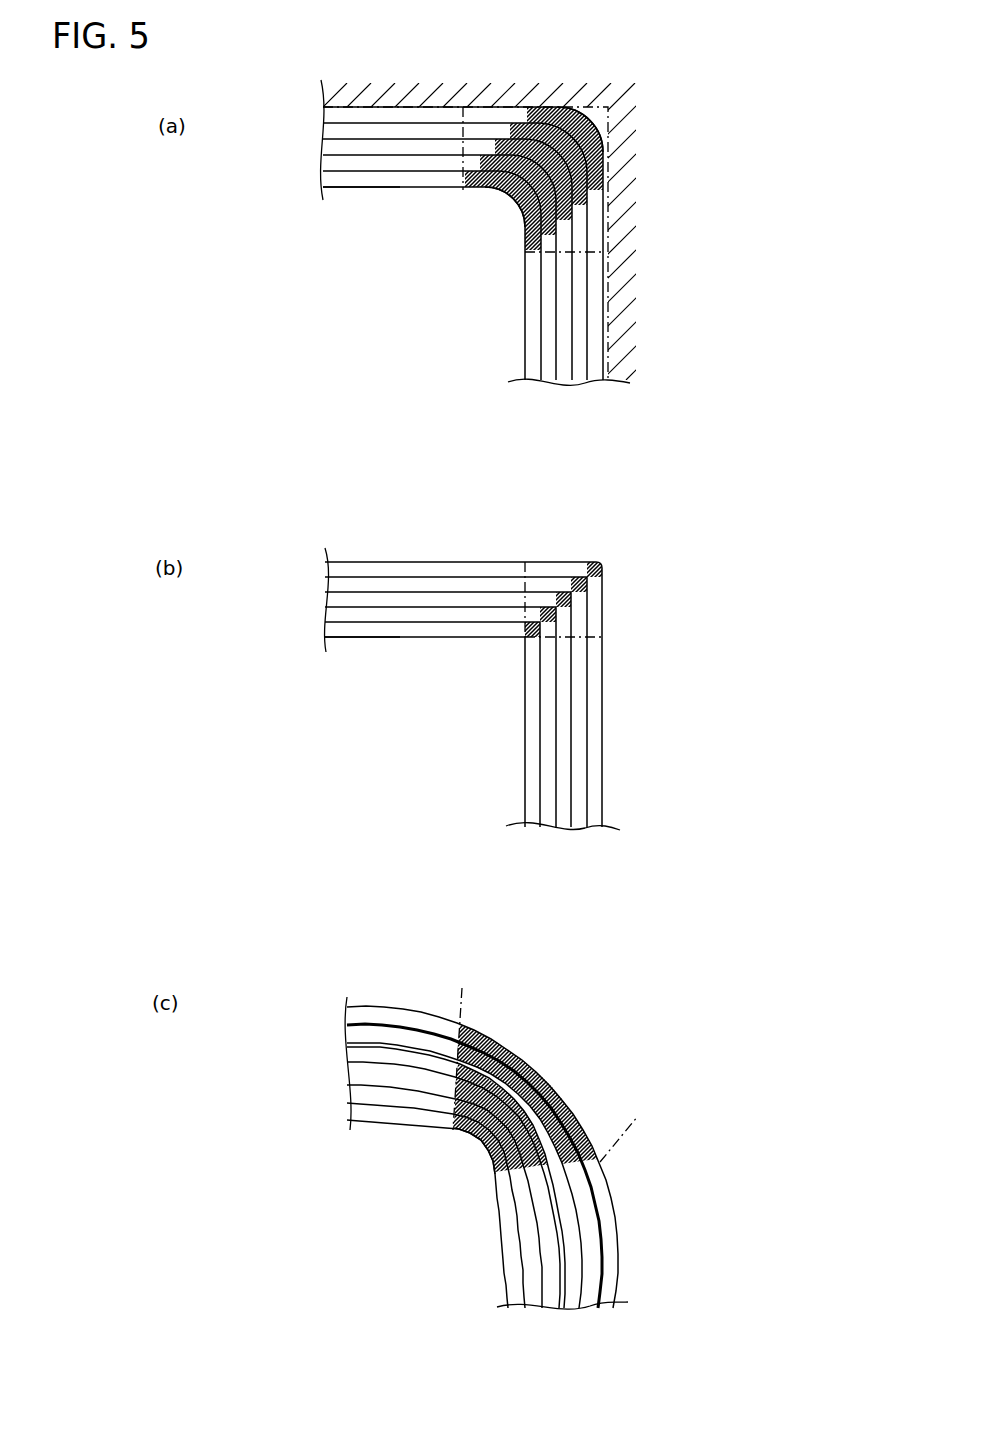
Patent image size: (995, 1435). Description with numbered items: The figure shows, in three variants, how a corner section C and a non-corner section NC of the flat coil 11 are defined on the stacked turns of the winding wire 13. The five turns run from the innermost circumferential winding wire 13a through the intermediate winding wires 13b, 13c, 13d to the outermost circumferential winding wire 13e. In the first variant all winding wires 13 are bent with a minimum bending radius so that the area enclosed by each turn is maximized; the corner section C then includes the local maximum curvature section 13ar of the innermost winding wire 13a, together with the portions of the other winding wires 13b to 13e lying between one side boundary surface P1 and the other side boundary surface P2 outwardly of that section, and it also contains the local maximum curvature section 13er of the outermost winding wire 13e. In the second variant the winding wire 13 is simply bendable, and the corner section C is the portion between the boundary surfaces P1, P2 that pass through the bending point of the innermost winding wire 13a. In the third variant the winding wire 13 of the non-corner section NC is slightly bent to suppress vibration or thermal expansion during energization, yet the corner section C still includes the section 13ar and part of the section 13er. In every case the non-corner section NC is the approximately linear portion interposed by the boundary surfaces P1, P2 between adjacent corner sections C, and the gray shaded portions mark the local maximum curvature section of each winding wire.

The flat coil 11 is at (347, 190).
The winding wire 13 is at (547, 707).
The innermost circumferential winding wire 13a is at (533, 277).
The winding wire 13b is at (548, 300).
The winding wire 13c is at (563, 323).
The winding wire 13d is at (580, 347).
The outermost circumferential winding wire 13e is at (718, 262).
The local maximum curvature section of the innermost circumferential winding wire 13ar is at (505, 212).
The local maximum curvature section of the outermost circumferential winding wire 13er is at (582, 118).
The corner section C is at (596, 127).
The non-corner section NC is at (399, 190).
The one side boundary surface P1 is at (463, 107).
The other side boundary surface P2 is at (600, 252).